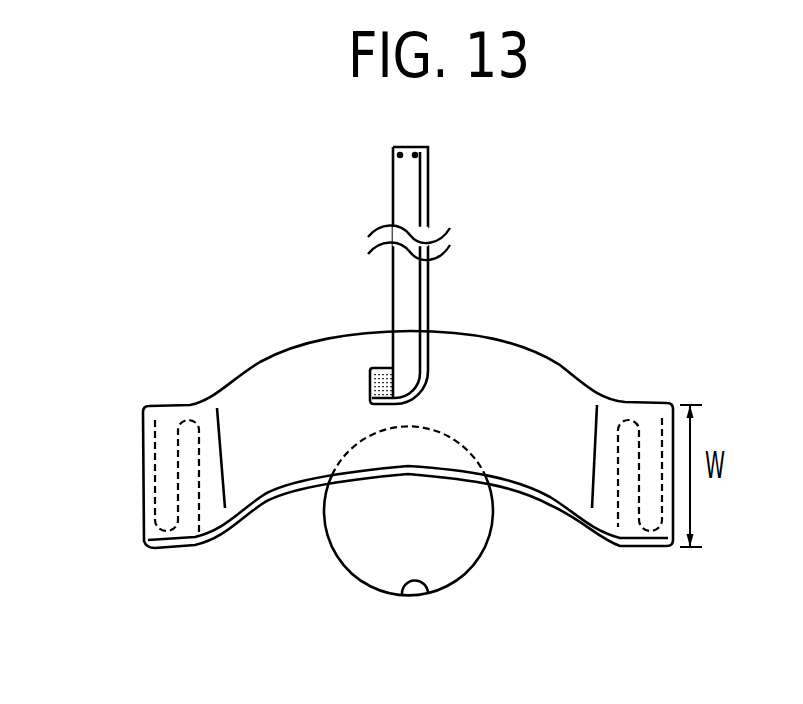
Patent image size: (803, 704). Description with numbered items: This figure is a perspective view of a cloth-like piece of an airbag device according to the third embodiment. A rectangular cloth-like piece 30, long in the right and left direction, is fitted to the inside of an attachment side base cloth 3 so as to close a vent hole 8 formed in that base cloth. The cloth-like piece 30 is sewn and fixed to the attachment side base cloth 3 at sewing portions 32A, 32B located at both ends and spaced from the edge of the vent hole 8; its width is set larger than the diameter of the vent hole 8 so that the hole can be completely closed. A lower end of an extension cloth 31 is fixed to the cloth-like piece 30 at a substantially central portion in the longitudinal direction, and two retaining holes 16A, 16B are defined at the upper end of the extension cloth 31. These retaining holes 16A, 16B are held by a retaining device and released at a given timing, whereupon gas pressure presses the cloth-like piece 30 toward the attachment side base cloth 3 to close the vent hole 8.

The attachment side base cloth 3 is at (282, 562).
The vent hole 8 is at (427, 592).
The retaining hole 16A is at (394, 150).
The retaining hole 16B is at (428, 150).
The cloth-like piece 30 is at (287, 378).
The extension cloth 31 is at (405, 293).
The sewing portion 32A is at (157, 473).
The sewing portion 32B is at (640, 453).